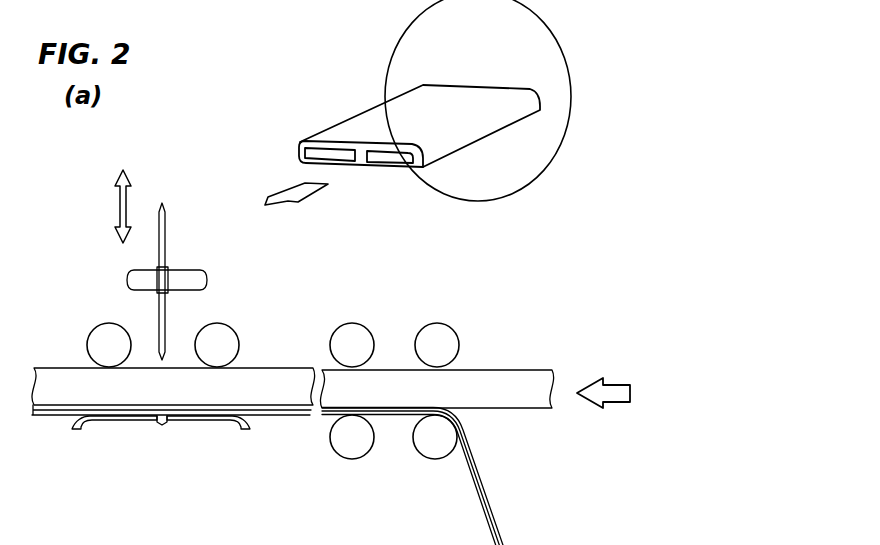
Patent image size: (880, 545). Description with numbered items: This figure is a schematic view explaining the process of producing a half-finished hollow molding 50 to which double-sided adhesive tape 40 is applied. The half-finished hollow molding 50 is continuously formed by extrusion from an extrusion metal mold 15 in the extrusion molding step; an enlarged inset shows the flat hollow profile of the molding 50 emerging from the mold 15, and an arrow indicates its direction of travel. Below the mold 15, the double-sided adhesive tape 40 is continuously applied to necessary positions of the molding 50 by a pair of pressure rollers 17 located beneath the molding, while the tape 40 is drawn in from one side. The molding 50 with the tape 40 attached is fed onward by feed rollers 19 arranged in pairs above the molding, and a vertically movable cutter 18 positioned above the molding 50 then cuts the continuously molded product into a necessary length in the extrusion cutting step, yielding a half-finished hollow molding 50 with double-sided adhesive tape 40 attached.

The extrusion metal mold 15 is at (537, 60).
The half-finished hollow molding 50 is at (357, 130).
The cutter 18 is at (170, 270).
The feed rollers 19 is at (102, 332).
The pressure rollers 17 is at (432, 443).
The double-sided adhesive tape 40 is at (515, 524).